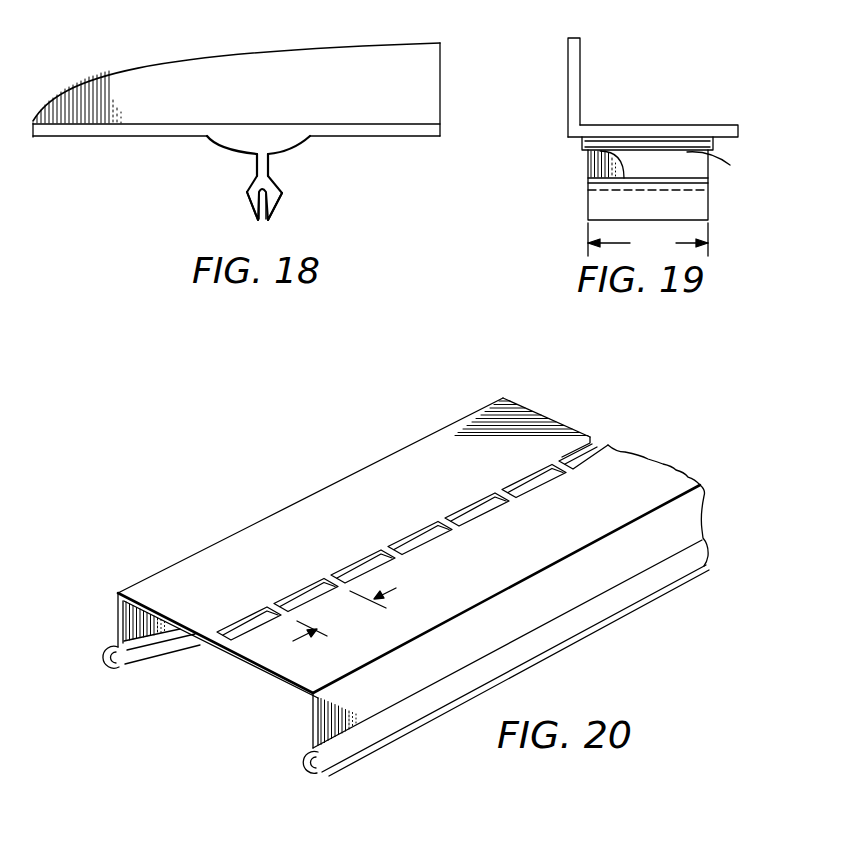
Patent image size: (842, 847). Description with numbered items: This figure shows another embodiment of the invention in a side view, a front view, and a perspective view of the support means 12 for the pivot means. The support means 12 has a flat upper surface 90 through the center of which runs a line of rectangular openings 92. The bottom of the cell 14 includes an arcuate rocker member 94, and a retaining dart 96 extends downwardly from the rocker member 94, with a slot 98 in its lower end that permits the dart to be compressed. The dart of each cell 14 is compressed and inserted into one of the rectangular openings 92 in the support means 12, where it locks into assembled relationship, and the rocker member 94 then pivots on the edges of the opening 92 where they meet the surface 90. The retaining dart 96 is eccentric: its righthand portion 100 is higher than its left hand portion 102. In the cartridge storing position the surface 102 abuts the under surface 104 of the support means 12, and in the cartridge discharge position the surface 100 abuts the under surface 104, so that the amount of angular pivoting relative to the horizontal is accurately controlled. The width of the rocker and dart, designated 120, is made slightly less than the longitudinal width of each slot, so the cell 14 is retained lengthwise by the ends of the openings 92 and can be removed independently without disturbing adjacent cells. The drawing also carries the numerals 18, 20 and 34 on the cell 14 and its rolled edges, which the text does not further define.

In FIG. 20, the support means 12 is at (660, 447).
In FIG. 18, the cell 14 is at (240, 38).
In FIG. 19, the cell 14 is at (673, 72).
In FIG. 18, the base flange 18 is at (388, 123).
In FIG. 19, the base flange 18 is at (700, 123).
In FIG. 19, the upstanding flange 20 is at (582, 98).
In FIG. 20, the rolled edge 34 is at (103, 655).
In FIG. 20, the flat upper surface 90 is at (512, 569).
In FIG. 20, the rectangular openings 92 is at (490, 490).
In FIG. 18, the arcuate rocker member 94 is at (228, 138).
In FIG. 19, the arcuate rocker member 94 is at (668, 159).
In FIG. 18, the retaining dart 96 is at (267, 207).
In FIG. 19, the retaining dart 96 is at (708, 204).
In FIG. 18, the slot 98 is at (267, 220).
In FIG. 19, the slot 98 is at (601, 193).
In FIG. 18, the righthand portion 100 is at (287, 188).
In FIG. 18, the left hand portion 102 is at (248, 193).
In FIG. 19, the left hand portion 102 is at (600, 167).
In FIG. 20, the under surface 104 is at (255, 672).
In FIG. 19, the width of the rocker and dart 120 is at (648, 239).
In FIG. 20, the width of the rocker and dart 120 is at (344, 614).